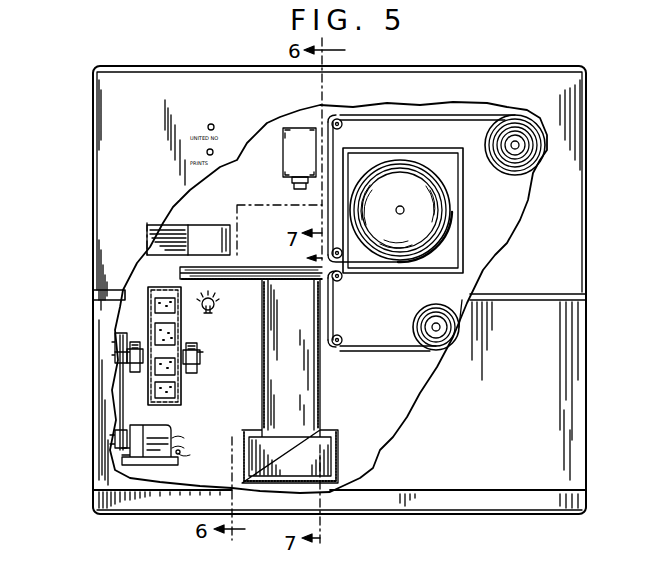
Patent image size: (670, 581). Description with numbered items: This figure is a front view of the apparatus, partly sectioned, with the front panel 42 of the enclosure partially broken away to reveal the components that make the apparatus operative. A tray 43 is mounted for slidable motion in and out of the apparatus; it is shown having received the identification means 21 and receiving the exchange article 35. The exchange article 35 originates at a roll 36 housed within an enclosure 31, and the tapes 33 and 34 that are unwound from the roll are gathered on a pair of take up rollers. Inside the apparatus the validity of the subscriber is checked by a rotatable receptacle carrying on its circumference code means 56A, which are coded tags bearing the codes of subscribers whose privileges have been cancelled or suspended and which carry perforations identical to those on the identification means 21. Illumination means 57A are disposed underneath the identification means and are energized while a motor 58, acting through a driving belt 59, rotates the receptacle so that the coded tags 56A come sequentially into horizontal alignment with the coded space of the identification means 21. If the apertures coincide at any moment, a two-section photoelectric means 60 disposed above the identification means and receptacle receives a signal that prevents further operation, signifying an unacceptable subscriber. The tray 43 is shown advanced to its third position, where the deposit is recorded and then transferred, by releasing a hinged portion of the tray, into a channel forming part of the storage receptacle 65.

The identification means 21 is at (222, 270).
The enclosure 31 is at (464, 205).
The unwound tape 33 is at (418, 118).
The unwound tape 34 is at (366, 341).
The exchange article 35 is at (292, 268).
The roll 36 is at (412, 204).
The front panel 42 is at (105, 129).
The tray 43 is at (245, 281).
The code means 56A is at (178, 329).
The illumination means 57A is at (214, 310).
The motor 58 is at (158, 430).
The driving belt 59 is at (118, 420).
The two-section photoelectric means 60 is at (210, 230).
The storage receptacle 65 is at (308, 397).